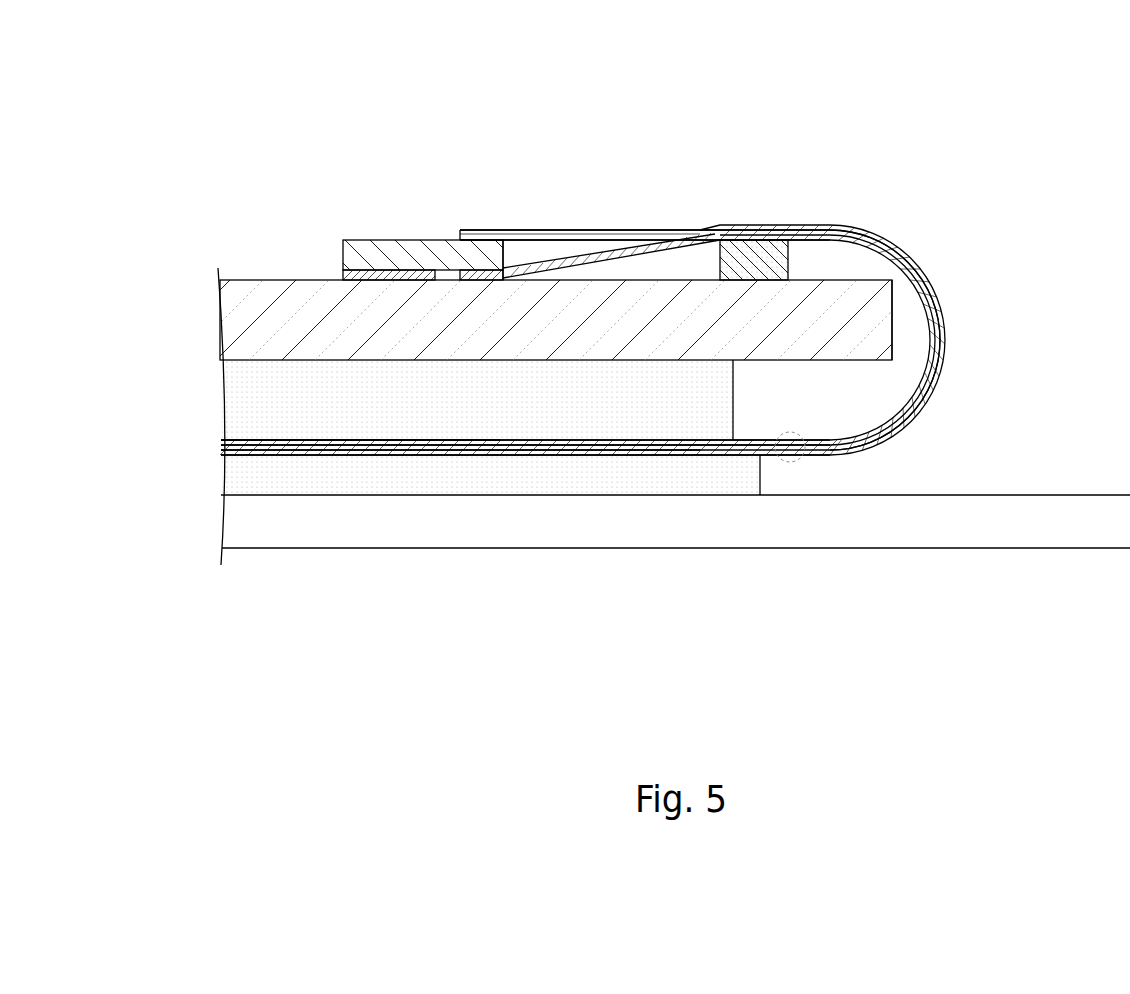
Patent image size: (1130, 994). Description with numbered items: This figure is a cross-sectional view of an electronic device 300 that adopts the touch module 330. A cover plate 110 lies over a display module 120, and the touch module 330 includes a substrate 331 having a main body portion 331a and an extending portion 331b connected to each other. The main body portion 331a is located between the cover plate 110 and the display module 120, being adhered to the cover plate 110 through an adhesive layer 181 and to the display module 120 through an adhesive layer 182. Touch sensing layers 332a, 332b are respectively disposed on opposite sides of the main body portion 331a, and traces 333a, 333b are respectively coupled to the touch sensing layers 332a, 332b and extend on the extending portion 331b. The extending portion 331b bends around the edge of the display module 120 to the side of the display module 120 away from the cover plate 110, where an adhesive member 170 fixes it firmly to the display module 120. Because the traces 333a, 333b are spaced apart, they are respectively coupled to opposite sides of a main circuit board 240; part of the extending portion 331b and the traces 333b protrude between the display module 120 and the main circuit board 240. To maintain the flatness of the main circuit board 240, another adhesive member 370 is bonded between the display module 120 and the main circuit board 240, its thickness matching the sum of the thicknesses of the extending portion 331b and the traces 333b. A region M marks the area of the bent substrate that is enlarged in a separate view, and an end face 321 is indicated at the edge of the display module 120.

The electronic device 300 is at (177, 74).
The cover plate 110 is at (240, 527).
The display module 120 is at (240, 318).
The adhesive member 170 is at (755, 258).
The adhesive layer 181 is at (240, 478).
The adhesive layer 182 is at (240, 405).
The main circuit board 240 is at (380, 255).
The end face of panel 321 is at (893, 320).
The touch module 330 is at (970, 348).
The substrate 331 is at (912, 608).
The main body portion 331a is at (690, 446).
The extending portion 331b is at (490, 277).
The touch sensing layer 332a is at (435, 440).
The touch sensing layer 332b is at (528, 452).
The traces 333a is at (596, 238).
The traces 333b is at (467, 275).
The adhesive member 370 is at (350, 275).
The region M is at (800, 462).